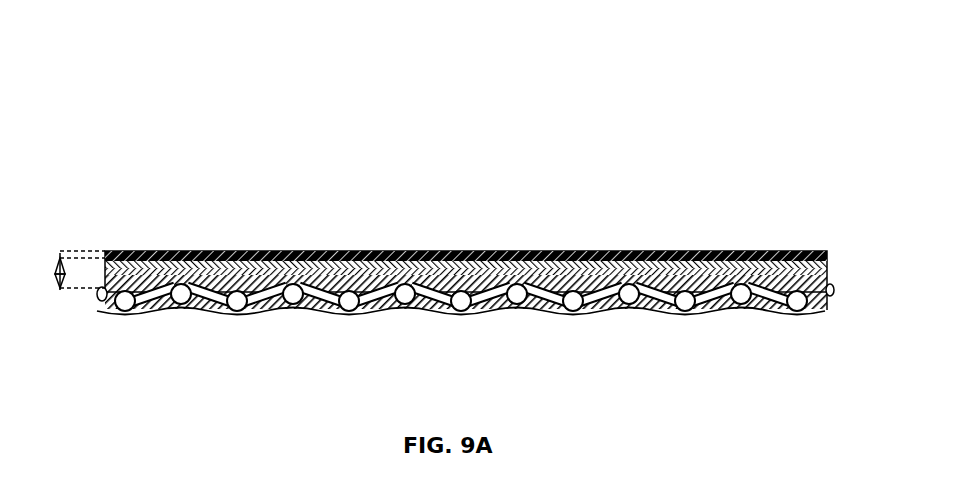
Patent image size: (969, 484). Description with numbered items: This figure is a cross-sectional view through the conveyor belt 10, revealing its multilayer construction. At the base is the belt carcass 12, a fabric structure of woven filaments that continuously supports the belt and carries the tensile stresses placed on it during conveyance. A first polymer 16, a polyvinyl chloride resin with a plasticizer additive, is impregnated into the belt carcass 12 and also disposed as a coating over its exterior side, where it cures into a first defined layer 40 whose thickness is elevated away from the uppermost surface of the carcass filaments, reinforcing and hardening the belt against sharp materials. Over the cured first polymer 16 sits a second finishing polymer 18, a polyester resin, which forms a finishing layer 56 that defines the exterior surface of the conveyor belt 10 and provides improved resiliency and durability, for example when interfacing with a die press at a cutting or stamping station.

The conveyor belt 10 is at (190, 100).
The belt carcass 12 is at (204, 296).
The first polymer 16 is at (827, 255).
The second finishing polymer 18 is at (495, 250).
The first defined layer 40 is at (55, 275).
The finishing layer 56 is at (60, 253).